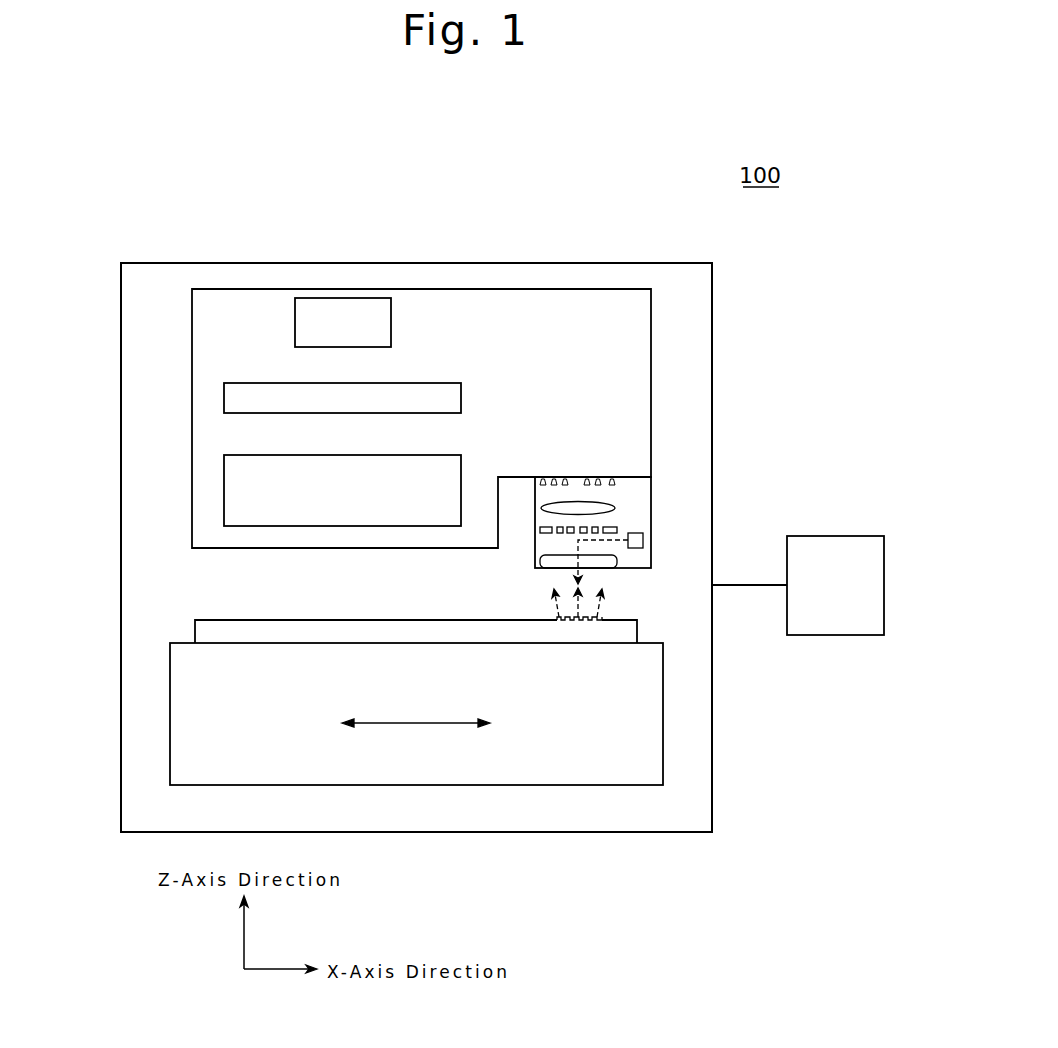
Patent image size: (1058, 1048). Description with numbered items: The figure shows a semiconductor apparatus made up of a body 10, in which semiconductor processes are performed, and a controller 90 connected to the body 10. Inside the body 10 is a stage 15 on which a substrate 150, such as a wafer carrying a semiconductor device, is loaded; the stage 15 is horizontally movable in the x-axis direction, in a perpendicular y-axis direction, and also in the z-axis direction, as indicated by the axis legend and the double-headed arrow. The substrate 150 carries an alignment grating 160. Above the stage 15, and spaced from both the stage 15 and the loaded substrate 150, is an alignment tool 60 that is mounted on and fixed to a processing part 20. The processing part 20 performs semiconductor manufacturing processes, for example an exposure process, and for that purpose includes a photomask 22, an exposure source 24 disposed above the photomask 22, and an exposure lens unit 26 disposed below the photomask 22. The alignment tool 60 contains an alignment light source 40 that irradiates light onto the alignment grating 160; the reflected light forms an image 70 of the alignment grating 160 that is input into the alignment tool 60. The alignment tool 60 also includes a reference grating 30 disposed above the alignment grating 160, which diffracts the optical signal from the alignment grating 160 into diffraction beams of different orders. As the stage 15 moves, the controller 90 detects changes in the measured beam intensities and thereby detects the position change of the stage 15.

The body 10 is at (270, 263).
The processing part 20 is at (631, 363).
The photomask 22 is at (237, 398).
The exposure source 24 is at (348, 312).
The exposure lens unit 26 is at (237, 491).
The alignment tool 60 is at (653, 502).
The reference grating 30 is at (539, 530).
The alignment light source 40 is at (643, 540).
The image 70 is at (601, 603).
The alignment grating 160 is at (557, 619).
The substrate 150 is at (208, 633).
The stage 15 is at (648, 739).
The controller 90 is at (842, 625).